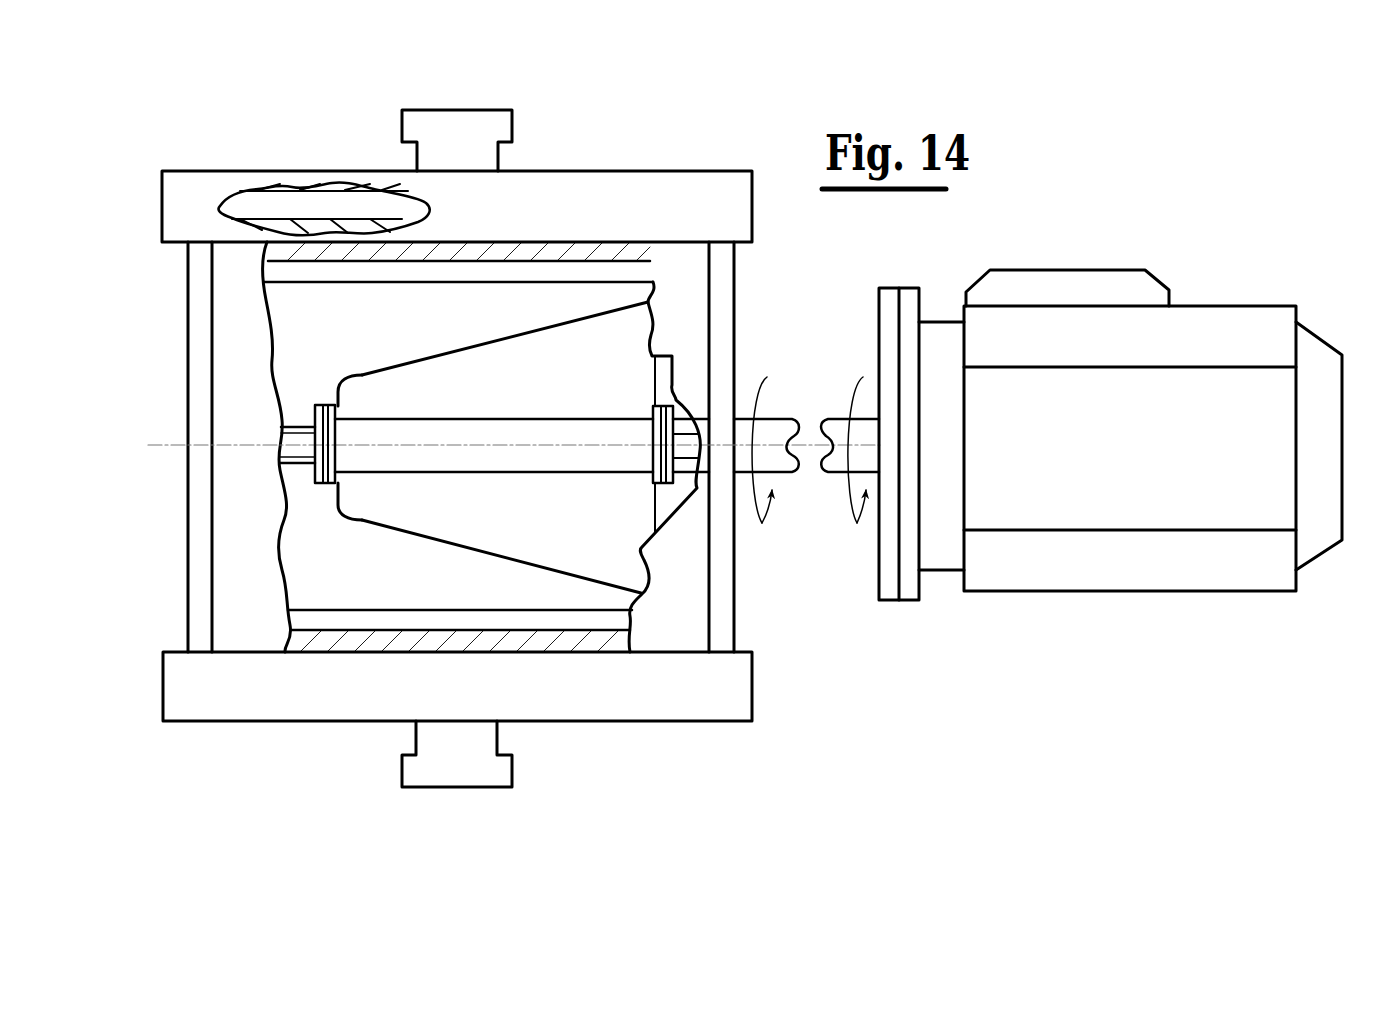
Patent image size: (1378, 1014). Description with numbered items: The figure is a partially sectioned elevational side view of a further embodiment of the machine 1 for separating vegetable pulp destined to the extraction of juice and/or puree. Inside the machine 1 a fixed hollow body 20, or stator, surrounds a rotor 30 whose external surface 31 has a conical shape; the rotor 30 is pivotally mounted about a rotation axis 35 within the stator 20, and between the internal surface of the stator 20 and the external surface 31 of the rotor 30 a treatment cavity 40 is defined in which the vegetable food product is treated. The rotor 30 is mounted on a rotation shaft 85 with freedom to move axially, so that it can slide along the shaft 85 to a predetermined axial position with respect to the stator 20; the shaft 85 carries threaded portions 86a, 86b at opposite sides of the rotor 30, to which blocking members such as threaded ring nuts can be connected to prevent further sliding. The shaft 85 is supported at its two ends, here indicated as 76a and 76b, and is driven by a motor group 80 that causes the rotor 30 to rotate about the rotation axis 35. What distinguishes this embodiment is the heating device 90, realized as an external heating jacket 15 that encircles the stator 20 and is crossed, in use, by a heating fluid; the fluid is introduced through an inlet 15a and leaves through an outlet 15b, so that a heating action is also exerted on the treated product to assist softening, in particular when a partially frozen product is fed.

The machine 1 is at (193, 122).
The external heating jacket 15 is at (291, 208).
The inlet 15a is at (419, 93).
The outlet 15b is at (418, 792).
The fixed hollow body 20 is at (335, 294).
The rotor 30 is at (479, 336).
The external surface 31 is at (364, 530).
The rotation axis 35 is at (162, 440).
The treatment cavity 40 is at (360, 583).
The first bearing 76a is at (312, 481).
The second bearing 76b is at (677, 404).
The motor 80 is at (1246, 293).
The rotation shaft 85 is at (841, 477).
The threaded portion 86a is at (291, 423).
The threaded portion 86b is at (683, 485).
The heating device 90 is at (651, 138).